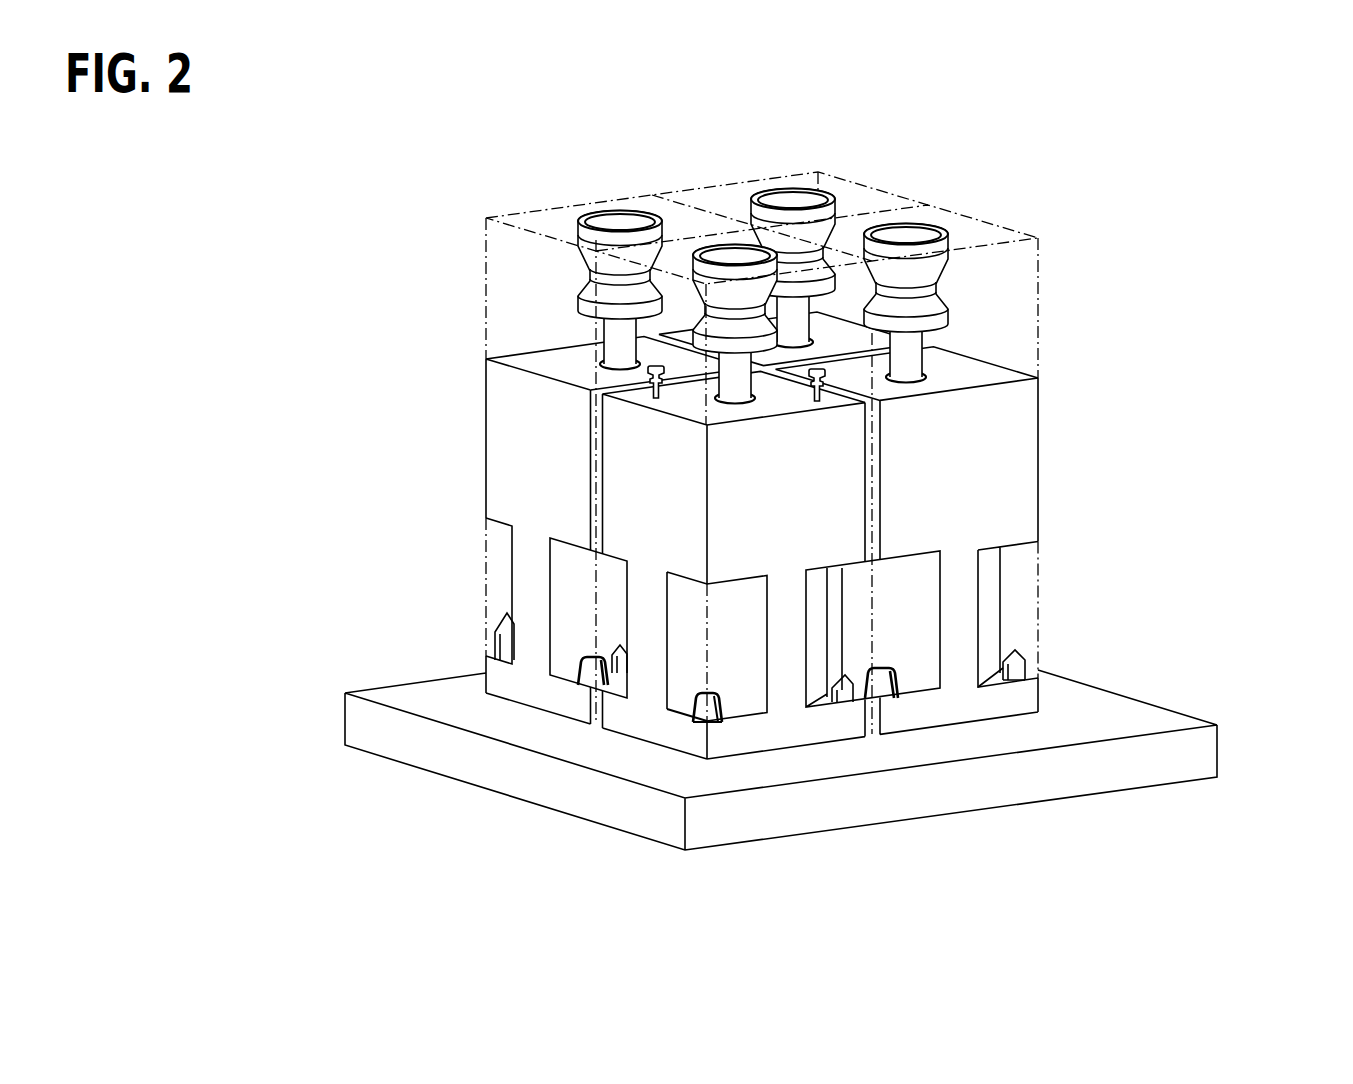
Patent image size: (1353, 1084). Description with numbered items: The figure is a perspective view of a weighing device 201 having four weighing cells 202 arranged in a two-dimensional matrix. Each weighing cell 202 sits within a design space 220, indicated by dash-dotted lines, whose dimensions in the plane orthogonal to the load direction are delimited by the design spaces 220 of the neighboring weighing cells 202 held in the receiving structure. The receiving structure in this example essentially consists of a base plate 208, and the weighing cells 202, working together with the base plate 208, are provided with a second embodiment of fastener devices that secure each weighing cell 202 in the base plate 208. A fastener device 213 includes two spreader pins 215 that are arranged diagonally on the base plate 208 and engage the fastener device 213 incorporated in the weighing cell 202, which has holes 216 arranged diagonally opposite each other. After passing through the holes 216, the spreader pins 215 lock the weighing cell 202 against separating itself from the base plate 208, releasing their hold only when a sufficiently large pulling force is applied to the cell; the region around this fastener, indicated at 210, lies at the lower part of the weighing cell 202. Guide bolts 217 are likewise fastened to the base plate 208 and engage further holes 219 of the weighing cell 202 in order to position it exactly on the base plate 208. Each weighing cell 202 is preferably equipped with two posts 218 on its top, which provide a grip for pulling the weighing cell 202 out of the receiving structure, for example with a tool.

The weighing device 201 is at (1118, 253).
The weighing cell 202 is at (992, 497).
The base plate 208 is at (1115, 760).
The opening 210 is at (677, 721).
The fastener device 213 is at (719, 723).
The spreader pin 215 is at (727, 717).
The hole 216 is at (697, 718).
The guide bolt 217 is at (1022, 661).
The post 218 is at (728, 403).
The further hole 219 is at (1030, 675).
The design space 220 is at (995, 332).